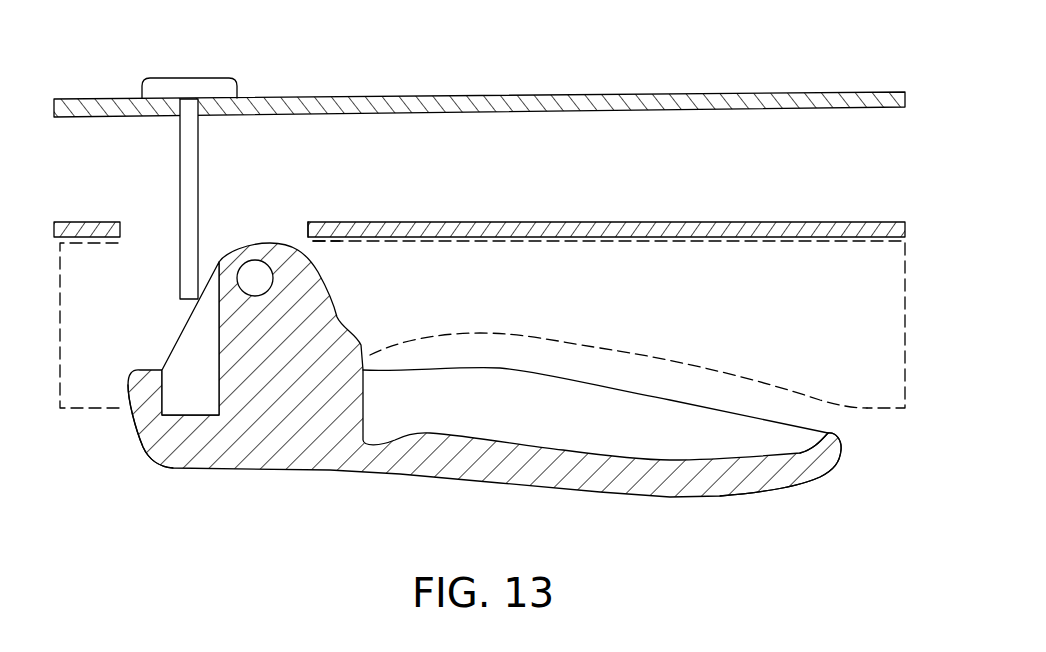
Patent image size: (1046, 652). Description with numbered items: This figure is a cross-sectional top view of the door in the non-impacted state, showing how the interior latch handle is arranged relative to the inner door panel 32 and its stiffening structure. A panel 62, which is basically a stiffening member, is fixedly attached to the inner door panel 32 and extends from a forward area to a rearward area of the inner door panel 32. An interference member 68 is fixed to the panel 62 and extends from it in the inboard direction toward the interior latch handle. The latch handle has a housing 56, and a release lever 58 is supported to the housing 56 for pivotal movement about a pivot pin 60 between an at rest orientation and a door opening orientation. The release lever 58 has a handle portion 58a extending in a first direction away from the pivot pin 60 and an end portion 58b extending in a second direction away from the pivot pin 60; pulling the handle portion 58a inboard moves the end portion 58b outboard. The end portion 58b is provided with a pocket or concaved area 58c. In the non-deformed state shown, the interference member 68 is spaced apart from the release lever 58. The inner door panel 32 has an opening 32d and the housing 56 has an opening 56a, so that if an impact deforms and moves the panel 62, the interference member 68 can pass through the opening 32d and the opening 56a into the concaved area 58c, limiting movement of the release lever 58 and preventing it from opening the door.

The panel 62 is at (596, 102).
The interference member 68 is at (189, 155).
The inner door panel 32 is at (702, 210).
The opening of the inner door panel 32d is at (308, 237).
The housing 56 is at (80, 412).
The opening of the housing 56a is at (308, 241).
The release lever 58 is at (398, 489).
The handle portion 58a is at (745, 473).
The end portion 58b is at (157, 448).
The concaved area 58c is at (195, 414).
The pivot pin 60 is at (253, 277).